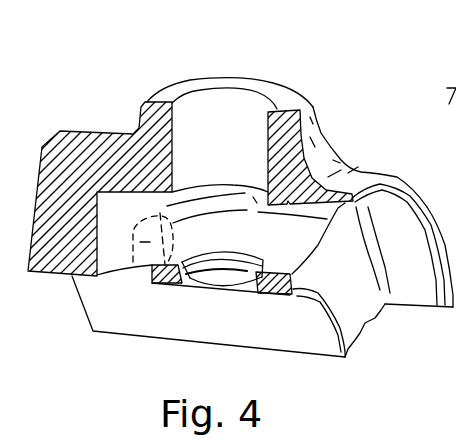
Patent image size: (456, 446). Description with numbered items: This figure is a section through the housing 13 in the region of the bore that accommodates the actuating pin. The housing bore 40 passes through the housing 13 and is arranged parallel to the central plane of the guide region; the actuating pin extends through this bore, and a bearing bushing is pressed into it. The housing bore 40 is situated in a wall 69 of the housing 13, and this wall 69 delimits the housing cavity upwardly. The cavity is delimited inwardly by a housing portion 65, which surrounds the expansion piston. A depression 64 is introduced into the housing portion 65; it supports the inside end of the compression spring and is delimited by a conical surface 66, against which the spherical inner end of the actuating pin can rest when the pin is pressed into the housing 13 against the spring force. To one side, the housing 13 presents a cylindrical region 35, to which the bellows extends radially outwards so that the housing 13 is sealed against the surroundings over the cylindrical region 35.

The housing 13 is at (105, 126).
The housing bore 40 is at (222, 130).
The wall 69 is at (302, 168).
The depression 64 is at (193, 276).
The conical surface 66 is at (214, 281).
The housing portion 65 is at (278, 283).
The cylindrical region 35 is at (418, 279).